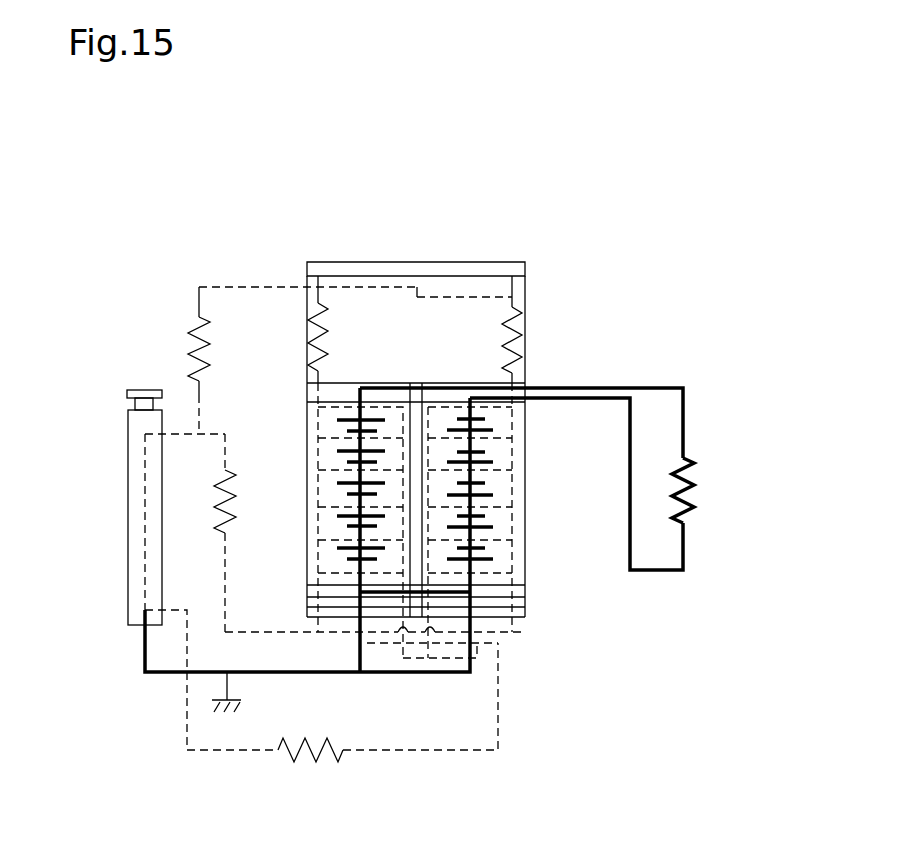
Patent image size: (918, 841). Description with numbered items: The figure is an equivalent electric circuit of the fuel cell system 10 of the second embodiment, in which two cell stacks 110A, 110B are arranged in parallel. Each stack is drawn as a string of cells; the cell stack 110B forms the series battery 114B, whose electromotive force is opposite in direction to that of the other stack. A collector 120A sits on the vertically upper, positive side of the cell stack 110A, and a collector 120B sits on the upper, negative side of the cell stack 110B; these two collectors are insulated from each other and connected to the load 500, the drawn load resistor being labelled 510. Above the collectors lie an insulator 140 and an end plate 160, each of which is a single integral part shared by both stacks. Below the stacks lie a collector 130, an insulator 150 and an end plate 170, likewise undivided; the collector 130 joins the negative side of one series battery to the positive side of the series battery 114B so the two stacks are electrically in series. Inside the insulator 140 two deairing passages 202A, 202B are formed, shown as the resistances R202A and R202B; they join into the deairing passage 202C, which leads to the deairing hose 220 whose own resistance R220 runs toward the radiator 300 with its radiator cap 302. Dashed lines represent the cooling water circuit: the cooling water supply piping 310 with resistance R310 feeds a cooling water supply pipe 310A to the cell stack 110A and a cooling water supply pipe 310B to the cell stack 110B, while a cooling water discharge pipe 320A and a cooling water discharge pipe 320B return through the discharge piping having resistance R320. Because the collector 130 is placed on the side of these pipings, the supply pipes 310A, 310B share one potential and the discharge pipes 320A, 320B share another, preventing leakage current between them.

The fuel cell system 10 is at (128, 176).
The deairing hose 220 is at (267, 329).
The electric resistance of deairing hose R220 is at (164, 360).
The deairing passage 202A is at (330, 313).
The deairing passage 202B is at (510, 318).
The deairing passage 202C is at (417, 287).
The end plate 160 is at (526, 281).
The insulator 140 is at (526, 319).
The collector 120A is at (307, 387).
The collector 120B is at (525, 383).
The cell stack 110A is at (307, 517).
The cell stack 110B is at (525, 477).
The series battery 114B is at (345, 548).
The collector 130 is at (525, 587).
The insulator 150 is at (525, 603).
The end plate 170 is at (525, 617).
The load 510 is at (692, 472).
The cooling water supply pipe 310A is at (360, 645).
The load 500 is at (377, 673).
The radiator 300 is at (128, 487).
The radiator cap 302 is at (127, 393).
The cooling water supply piping 310 is at (367, 577).
The electric resistance of cooling water supply piping R310 is at (333, 748).
The electric resistance of cooling water discharge piping R320 is at (238, 512).
The cooling water discharge pipe 320A is at (320, 627).
The cooling water discharge pipe 320B is at (520, 628).
The cooling water supply pipe 310B is at (500, 650).